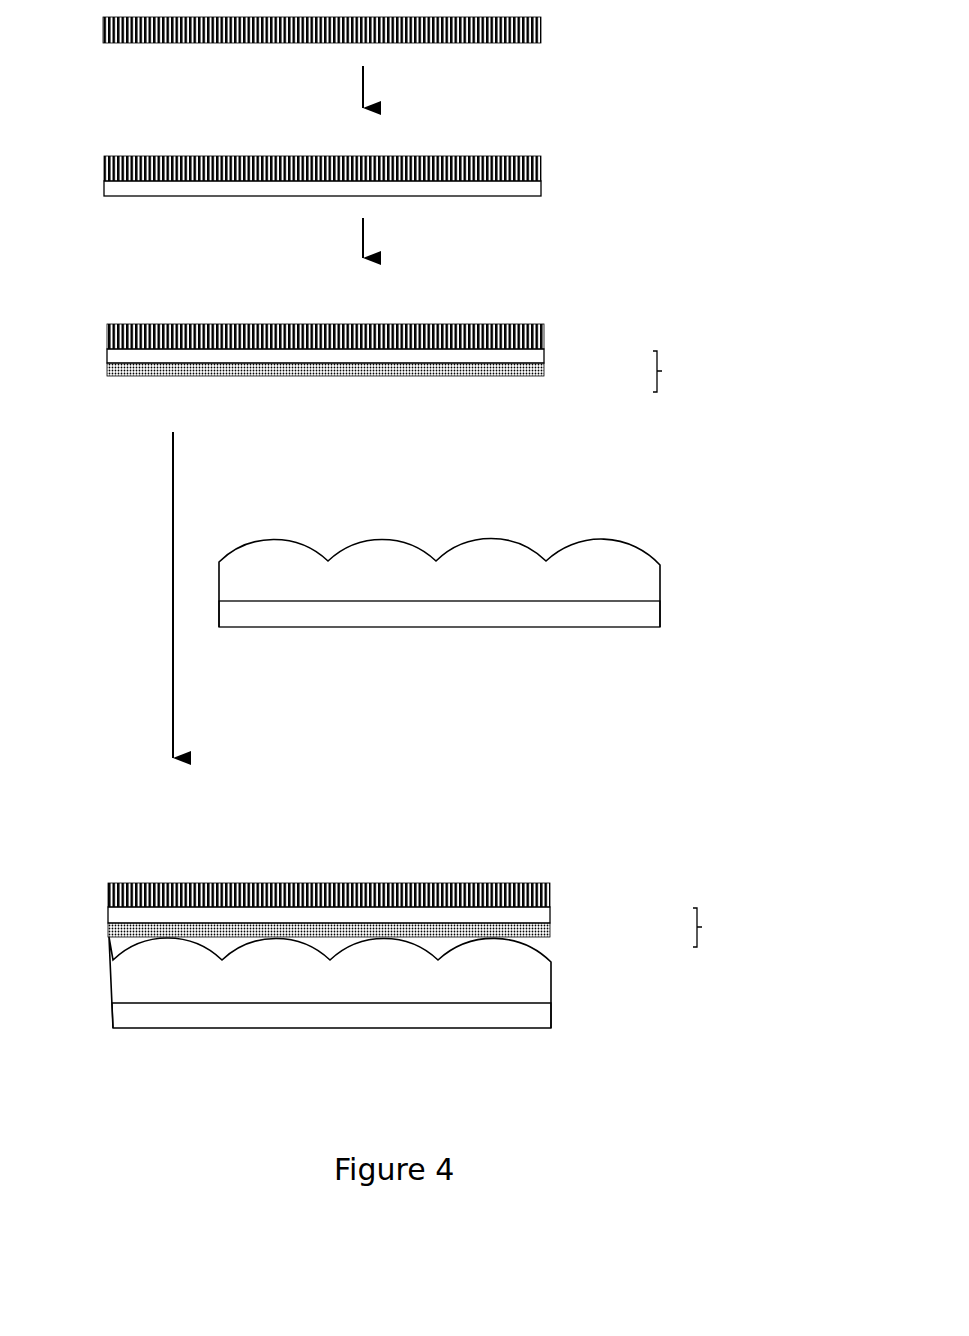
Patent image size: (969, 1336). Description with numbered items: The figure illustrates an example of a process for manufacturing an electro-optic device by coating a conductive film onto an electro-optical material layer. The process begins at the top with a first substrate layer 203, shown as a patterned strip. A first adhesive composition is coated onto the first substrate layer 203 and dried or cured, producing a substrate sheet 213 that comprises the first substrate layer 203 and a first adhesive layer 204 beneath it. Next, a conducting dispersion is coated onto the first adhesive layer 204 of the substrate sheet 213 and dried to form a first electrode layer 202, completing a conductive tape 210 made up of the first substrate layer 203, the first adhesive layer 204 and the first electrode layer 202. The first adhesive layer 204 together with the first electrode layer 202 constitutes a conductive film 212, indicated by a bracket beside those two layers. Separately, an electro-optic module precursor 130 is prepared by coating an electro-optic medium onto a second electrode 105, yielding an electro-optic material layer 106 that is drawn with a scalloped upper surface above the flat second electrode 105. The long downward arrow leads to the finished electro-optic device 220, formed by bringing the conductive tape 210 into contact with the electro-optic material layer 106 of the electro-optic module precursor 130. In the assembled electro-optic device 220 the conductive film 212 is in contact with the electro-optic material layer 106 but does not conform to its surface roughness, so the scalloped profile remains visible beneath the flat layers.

The first substrate layer 203 is at (543, 29).
The first adhesive layer 204 is at (532, 189).
The first electrode layer 202 is at (540, 376).
The conductive film 212 is at (713, 649).
The substrate sheet 213 is at (283, 176).
The conductive tape 210 is at (288, 350).
The electro-optic device 220 is at (293, 955).
The electro-optic module precursor 130 is at (439, 557).
The electro-optic material layer 106 is at (660, 580).
The second electrode 105 is at (660, 624).